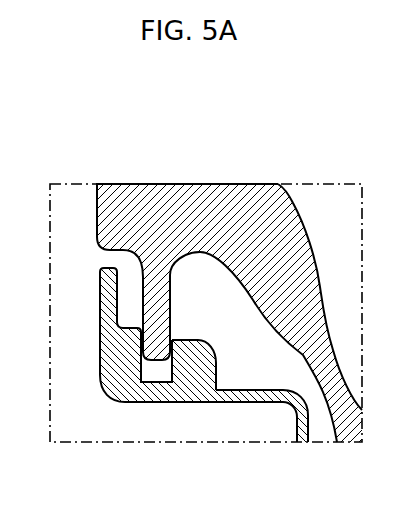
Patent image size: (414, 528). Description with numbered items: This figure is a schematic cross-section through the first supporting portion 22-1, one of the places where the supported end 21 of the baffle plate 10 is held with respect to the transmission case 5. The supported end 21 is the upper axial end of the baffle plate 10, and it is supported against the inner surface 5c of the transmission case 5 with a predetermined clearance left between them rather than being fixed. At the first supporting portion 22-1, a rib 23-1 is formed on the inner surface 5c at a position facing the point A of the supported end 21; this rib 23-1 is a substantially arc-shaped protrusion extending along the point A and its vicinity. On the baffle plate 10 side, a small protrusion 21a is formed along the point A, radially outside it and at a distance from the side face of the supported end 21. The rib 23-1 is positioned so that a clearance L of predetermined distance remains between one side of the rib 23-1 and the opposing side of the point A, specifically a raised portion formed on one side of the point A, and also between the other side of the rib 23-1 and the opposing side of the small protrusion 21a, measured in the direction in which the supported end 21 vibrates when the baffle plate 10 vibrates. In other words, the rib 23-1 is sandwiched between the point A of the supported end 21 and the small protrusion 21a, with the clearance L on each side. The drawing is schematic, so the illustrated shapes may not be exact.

The transmission case 5 is at (90, 211).
The inner surface 5c is at (250, 300).
The first supporting portion 22-1 is at (287, 97).
The point A is at (142, 185).
The supported end 21 is at (110, 268).
The rib 23-1 is at (170, 295).
The baffle plate 10 is at (146, 412).
The small protrusion 21a is at (208, 361).
The clearance L is at (133, 322).